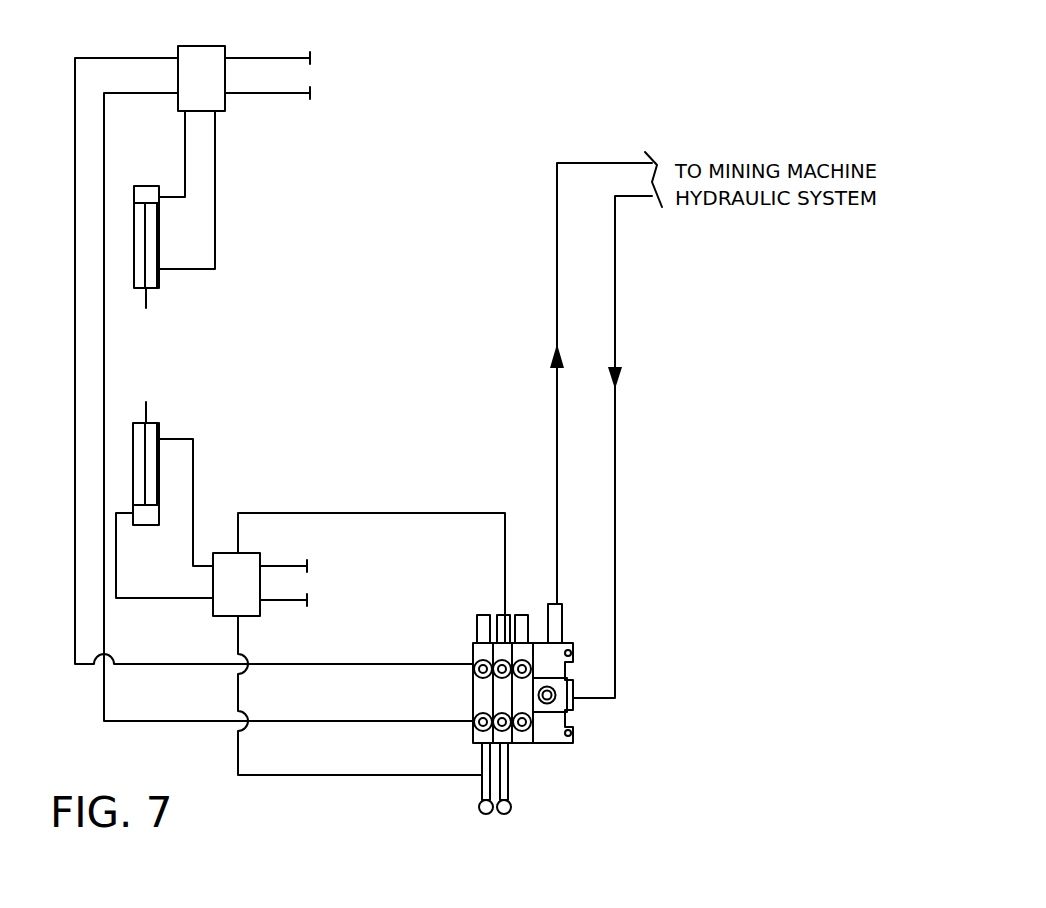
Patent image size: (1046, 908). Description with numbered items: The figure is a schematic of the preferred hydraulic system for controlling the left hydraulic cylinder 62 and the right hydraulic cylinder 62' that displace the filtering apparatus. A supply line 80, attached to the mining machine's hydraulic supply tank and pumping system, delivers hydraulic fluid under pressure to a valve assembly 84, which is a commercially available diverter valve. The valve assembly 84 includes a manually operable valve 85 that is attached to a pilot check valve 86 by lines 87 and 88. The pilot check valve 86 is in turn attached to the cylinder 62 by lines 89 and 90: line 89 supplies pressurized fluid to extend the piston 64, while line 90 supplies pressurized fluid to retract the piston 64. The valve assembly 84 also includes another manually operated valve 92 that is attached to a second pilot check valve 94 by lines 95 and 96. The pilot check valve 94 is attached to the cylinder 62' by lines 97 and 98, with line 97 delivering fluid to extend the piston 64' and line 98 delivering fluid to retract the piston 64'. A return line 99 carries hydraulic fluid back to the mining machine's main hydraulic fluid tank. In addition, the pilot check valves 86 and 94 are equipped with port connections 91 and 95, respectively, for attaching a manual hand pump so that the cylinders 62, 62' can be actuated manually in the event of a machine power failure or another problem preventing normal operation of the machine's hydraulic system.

The supply line 80 is at (615, 548).
The valve assembly 84 is at (500, 825).
The manually operable valve 85 is at (510, 773).
The pilot check valve 86 is at (253, 600).
The line 87 is at (390, 512).
The line 88 is at (315, 775).
The line 89 is at (123, 597).
The line 90 is at (193, 488).
The port connection 91 is at (307, 566).
The manually operated valve 92 is at (478, 792).
The pilot check valve 94 is at (205, 60).
The line 95 is at (85, 55).
The line 96 is at (117, 96).
The line 97 is at (185, 165).
The line 98 is at (216, 212).
The return line 99 is at (557, 283).
The left hydraulic cylinder 62 is at (182, 447).
The right hydraulic cylinder 62' is at (157, 281).
The piston 64 is at (205, 421).
The piston 64' is at (203, 310).